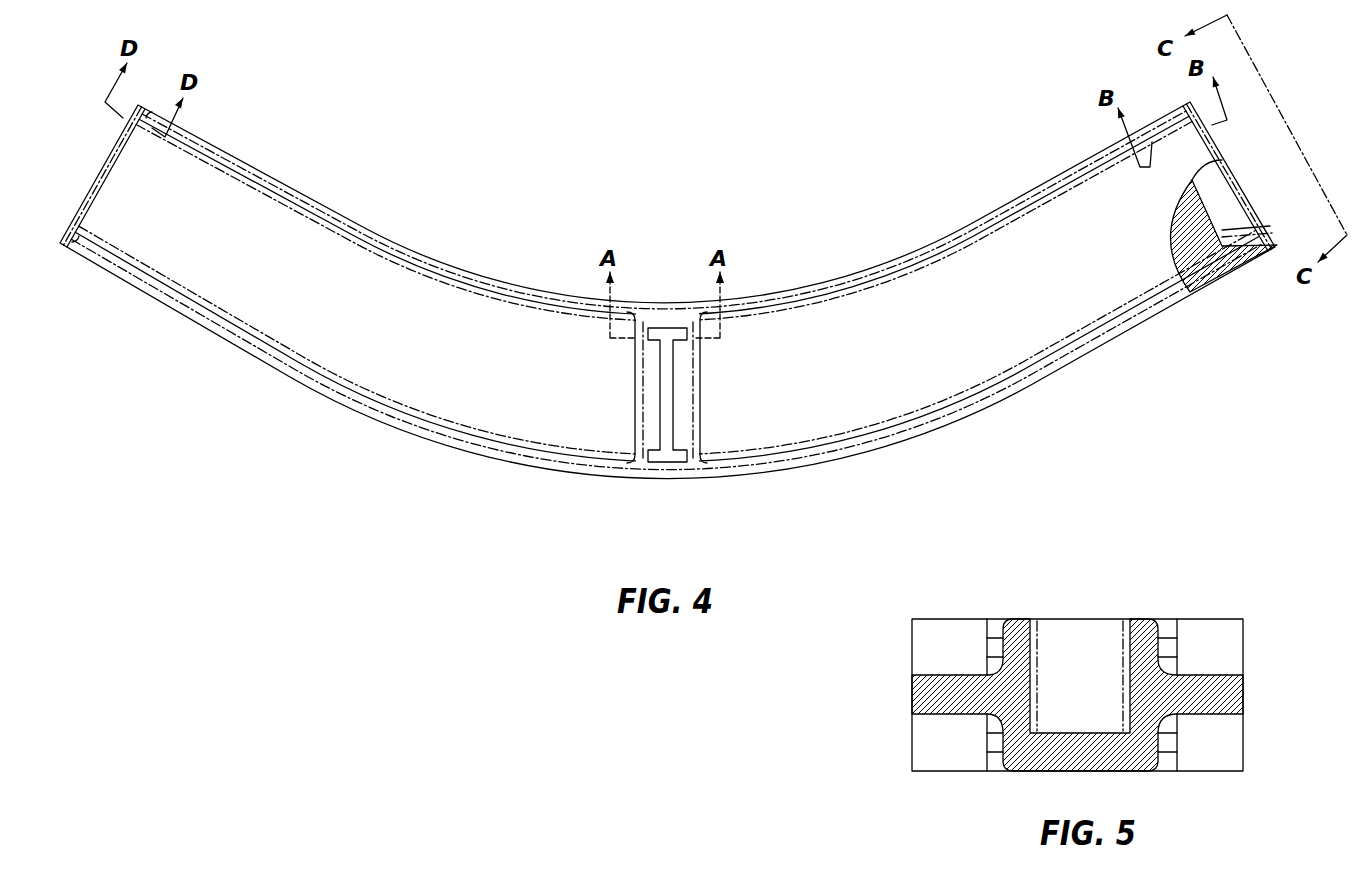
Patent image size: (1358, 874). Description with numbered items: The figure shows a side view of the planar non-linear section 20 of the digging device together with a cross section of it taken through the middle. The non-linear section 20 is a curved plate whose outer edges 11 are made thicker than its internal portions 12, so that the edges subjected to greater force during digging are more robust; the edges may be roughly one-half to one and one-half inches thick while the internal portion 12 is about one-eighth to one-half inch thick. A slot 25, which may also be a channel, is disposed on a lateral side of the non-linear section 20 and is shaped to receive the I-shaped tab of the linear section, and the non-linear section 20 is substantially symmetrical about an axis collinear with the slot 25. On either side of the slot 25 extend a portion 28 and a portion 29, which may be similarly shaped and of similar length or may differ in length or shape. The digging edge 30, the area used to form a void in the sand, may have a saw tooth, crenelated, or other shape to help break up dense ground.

In FIG. 4, the outer edges 11 is at (318, 203).
In FIG. 4, the internal portions 12 is at (342, 345).
In FIG. 5, the internal portions 12 is at (1210, 690).
In FIG. 4, the non-linear section 20 is at (547, 420).
In FIG. 4, the slot 25 is at (668, 455).
In FIG. 5, the slot 25 is at (1083, 657).
In FIG. 4, the portion 28 is at (168, 262).
In FIG. 4, the portion 29 is at (1005, 352).
In FIG. 4, the digging edge 30 is at (650, 485).